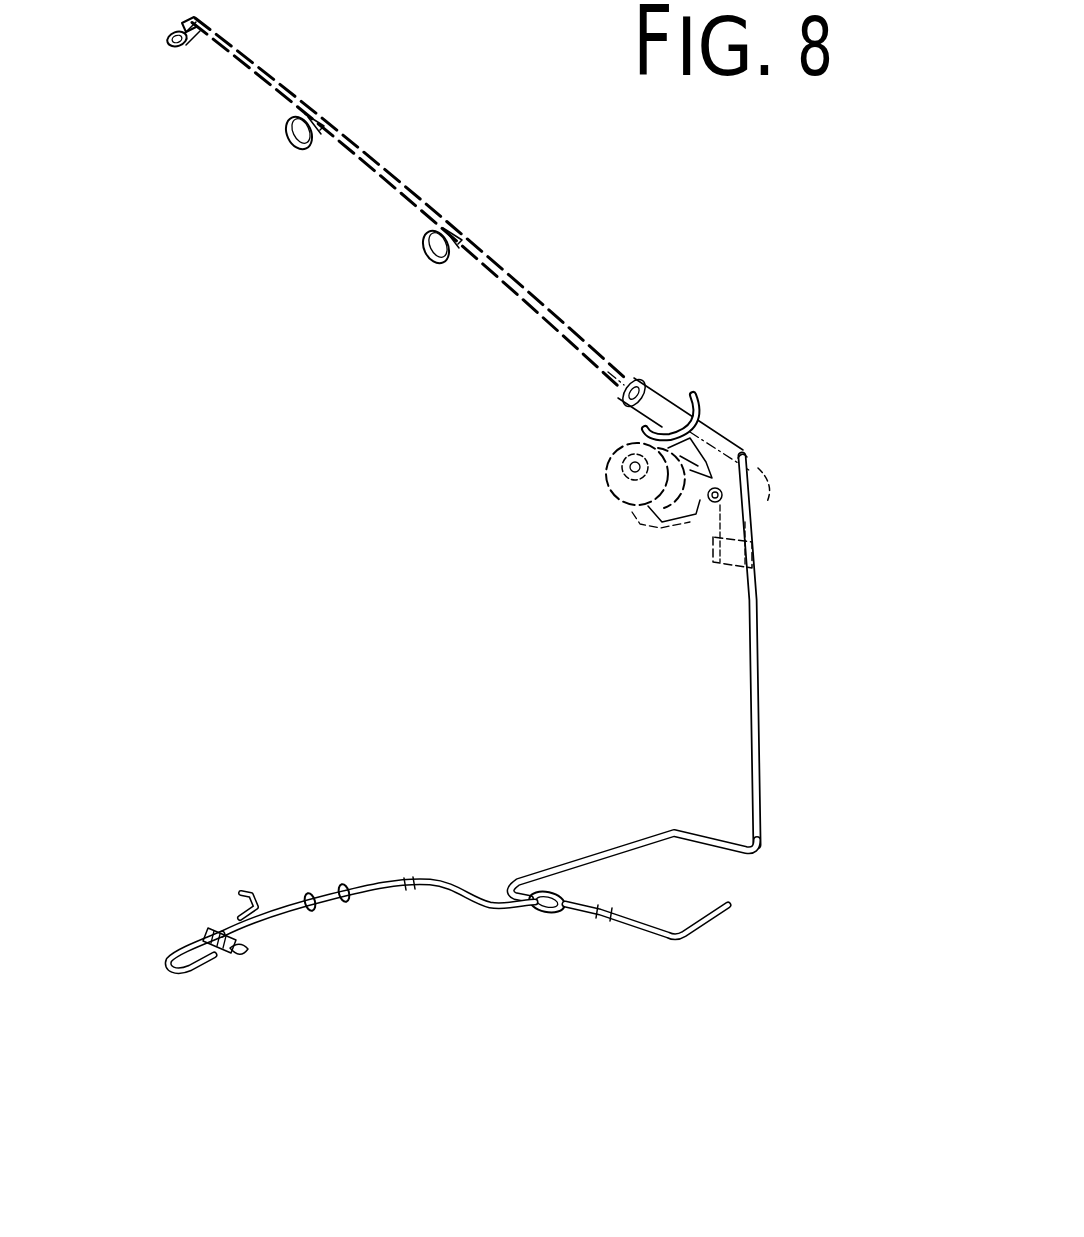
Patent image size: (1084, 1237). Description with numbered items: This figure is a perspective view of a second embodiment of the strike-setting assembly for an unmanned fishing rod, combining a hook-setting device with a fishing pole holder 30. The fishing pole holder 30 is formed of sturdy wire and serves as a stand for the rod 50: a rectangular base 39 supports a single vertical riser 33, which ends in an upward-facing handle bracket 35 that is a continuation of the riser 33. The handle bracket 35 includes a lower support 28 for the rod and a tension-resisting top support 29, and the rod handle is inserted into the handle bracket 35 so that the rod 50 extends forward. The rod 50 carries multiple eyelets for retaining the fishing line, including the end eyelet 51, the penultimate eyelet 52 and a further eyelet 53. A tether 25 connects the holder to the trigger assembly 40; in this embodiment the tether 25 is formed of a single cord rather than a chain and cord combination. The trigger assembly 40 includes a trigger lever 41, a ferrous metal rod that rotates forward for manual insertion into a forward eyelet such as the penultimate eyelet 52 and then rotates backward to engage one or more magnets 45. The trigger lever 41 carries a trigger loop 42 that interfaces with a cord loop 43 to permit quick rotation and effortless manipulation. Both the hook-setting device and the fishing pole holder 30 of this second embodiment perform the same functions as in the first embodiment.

The tether 25 is at (465, 887).
The lower support 28 is at (690, 432).
The tension-resisting top support 29 is at (748, 457).
The fishing pole holder 30 is at (670, 676).
The vertical riser 33 is at (750, 679).
The handle bracket 35 is at (595, 426).
The base 39 is at (648, 810).
The trigger assembly 40 is at (198, 930).
The trigger lever 41 is at (250, 892).
The trigger loop 42 is at (170, 965).
The cord loop 43 is at (205, 962).
The magnets 45 is at (342, 900).
The rod 50 is at (533, 297).
The end eyelet 51 is at (173, 50).
The penultimate eyelet 52 is at (297, 142).
The eyelet 53 is at (435, 258).